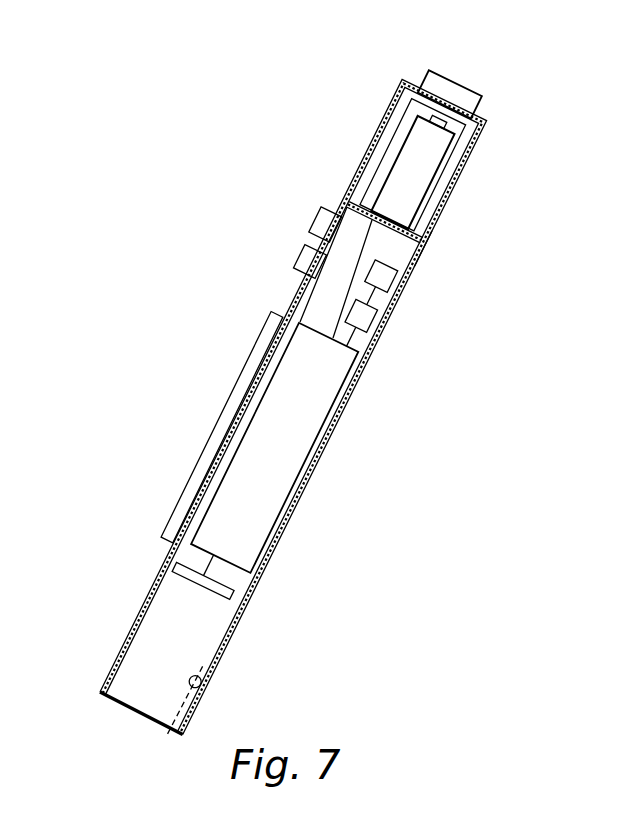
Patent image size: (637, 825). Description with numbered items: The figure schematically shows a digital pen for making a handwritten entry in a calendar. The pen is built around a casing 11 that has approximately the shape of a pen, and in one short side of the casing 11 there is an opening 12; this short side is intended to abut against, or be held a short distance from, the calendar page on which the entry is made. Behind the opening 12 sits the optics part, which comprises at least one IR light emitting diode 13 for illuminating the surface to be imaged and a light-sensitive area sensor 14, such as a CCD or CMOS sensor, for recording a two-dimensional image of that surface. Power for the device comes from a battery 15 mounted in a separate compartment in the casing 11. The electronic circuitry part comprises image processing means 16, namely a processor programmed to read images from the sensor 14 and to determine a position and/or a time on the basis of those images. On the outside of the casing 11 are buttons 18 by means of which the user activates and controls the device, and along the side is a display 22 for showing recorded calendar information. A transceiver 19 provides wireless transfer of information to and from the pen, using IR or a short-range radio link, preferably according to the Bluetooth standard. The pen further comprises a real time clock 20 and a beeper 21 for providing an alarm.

The casing 11 is at (365, 378).
The opening 12 is at (134, 710).
The IR light emitting diode 13 is at (199, 683).
The light-sensitive area sensor 14 is at (232, 583).
The battery 15 is at (411, 182).
The image processing means 16 is at (288, 462).
The buttons 18 is at (305, 260).
The transceiver 19 is at (452, 87).
The real time clock 20 is at (378, 317).
The beeper 21 is at (410, 268).
The display 22 is at (230, 414).